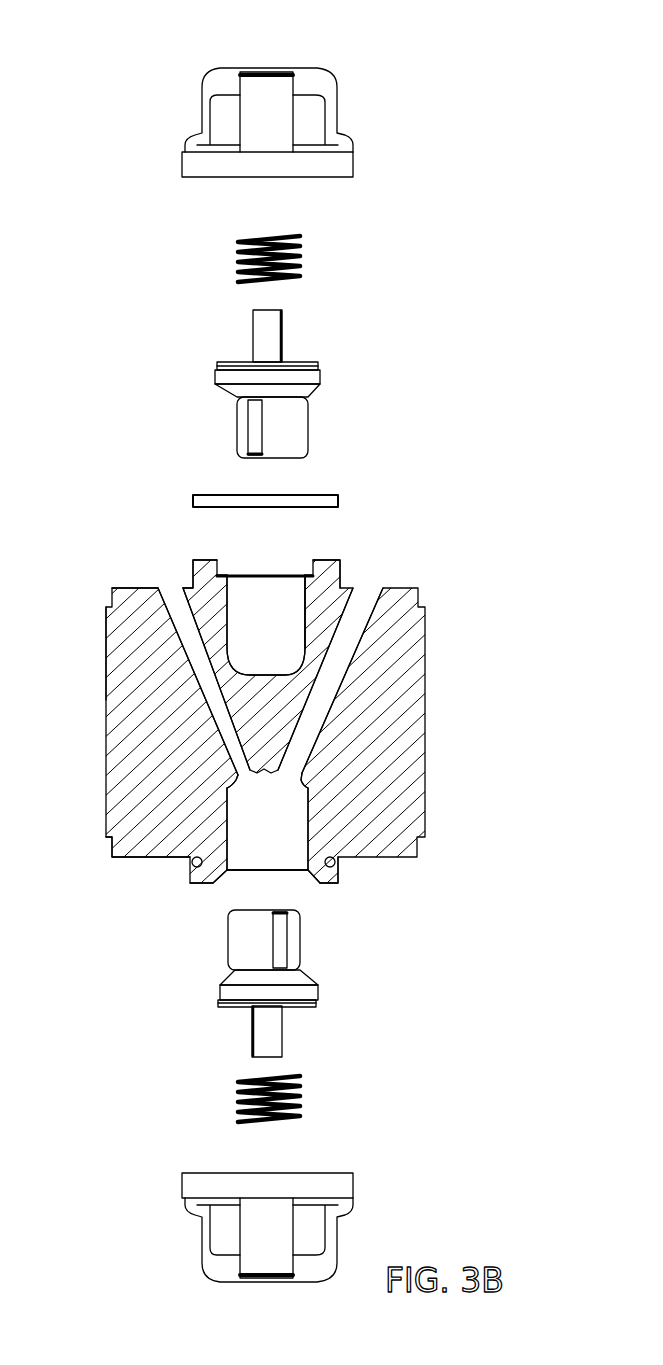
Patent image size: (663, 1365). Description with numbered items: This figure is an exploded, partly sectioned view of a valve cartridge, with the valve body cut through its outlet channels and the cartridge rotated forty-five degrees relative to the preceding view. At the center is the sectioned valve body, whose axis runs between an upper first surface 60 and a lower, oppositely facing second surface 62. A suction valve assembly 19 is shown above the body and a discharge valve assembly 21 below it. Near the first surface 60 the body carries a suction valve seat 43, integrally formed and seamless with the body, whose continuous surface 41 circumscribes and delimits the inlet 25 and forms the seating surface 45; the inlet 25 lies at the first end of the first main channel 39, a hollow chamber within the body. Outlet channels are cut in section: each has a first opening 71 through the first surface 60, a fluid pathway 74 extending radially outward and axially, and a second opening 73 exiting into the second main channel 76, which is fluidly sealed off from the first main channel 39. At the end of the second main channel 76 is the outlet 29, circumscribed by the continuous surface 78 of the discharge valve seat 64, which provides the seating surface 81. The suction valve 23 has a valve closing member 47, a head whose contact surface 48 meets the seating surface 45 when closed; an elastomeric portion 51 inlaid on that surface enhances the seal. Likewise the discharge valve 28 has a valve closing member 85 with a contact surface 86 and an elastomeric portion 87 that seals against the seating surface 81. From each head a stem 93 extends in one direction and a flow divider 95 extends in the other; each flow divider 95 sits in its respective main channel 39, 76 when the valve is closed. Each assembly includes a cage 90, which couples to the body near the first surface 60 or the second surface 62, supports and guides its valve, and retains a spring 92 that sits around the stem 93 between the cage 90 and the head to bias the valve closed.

The suction valve assembly 19 is at (246, 354).
The discharge valve assembly 21 is at (239, 986).
The suction valve 23 is at (302, 372).
The inlet 25 is at (294, 561).
The discharge valve 28 is at (304, 986).
The outlet 29 is at (231, 883).
The first main channel 39 is at (300, 606).
The surface 41 is at (226, 573).
The suction valve seat 43 is at (192, 568).
The seating surface 45 is at (263, 567).
The valve closing member 47 is at (228, 363).
The contact surface 48 is at (324, 387).
The portion 51 is at (217, 370).
The first surface 60 is at (418, 586).
The second surface 62 is at (143, 858).
The discharge valve seat 64 is at (342, 872).
The first opening 71 is at (156, 585).
The second opening 73 is at (304, 777).
The fluid pathway 74 is at (320, 691).
The second main channel 76 is at (286, 828).
The surface 78 is at (318, 885).
The seating surface 81 is at (248, 880).
The valve closing member 85 is at (230, 1008).
The contact surface 86 is at (325, 985).
The portion 87 is at (222, 982).
The cage 90 is at (290, 68).
The spring 92 is at (300, 240).
The stem 93 is at (282, 326).
The flow divider 95 is at (246, 432).